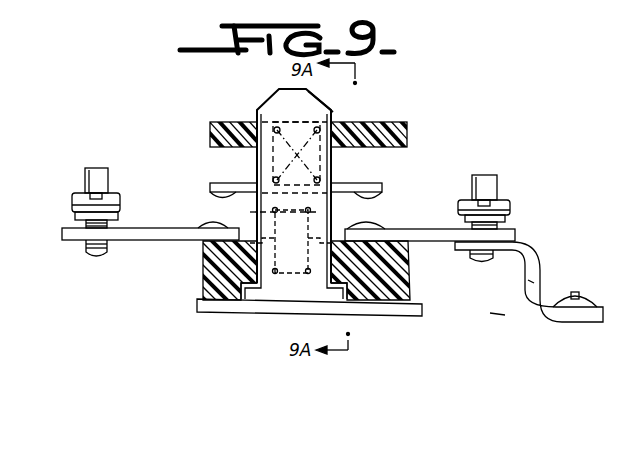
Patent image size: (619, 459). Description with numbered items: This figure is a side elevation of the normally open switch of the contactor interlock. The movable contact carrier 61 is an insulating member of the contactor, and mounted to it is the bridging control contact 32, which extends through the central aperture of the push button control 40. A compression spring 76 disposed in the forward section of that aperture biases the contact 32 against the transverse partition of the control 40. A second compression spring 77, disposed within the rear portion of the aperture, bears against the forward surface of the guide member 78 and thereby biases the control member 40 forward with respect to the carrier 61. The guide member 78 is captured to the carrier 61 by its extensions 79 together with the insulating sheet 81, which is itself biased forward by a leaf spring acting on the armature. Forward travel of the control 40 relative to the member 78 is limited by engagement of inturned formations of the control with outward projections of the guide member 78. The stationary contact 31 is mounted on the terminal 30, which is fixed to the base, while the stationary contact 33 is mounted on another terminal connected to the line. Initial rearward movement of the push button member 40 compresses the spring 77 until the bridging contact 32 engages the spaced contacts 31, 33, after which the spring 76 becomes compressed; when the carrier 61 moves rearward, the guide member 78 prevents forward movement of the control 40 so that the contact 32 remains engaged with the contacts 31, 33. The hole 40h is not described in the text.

The terminal 30 is at (541, 266).
The stationary contact 31 is at (361, 222).
The movable contact 32 is at (354, 184).
The stationary contact 33 is at (206, 222).
The push button actuator 40 is at (323, 101).
The panel hole 40h is at (258, 118).
The movable contact carrier 61 is at (405, 283).
The compression spring 76 is at (330, 163).
The compression spring 77 is at (254, 212).
The guide member 78 is at (268, 275).
The extensions 79 is at (247, 298).
The insulating sheet 81 is at (212, 305).